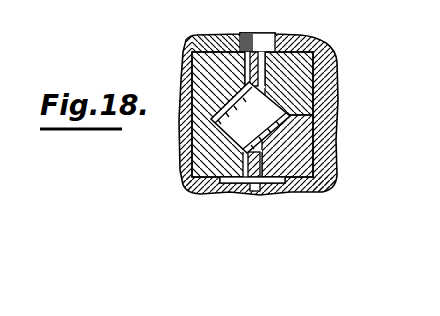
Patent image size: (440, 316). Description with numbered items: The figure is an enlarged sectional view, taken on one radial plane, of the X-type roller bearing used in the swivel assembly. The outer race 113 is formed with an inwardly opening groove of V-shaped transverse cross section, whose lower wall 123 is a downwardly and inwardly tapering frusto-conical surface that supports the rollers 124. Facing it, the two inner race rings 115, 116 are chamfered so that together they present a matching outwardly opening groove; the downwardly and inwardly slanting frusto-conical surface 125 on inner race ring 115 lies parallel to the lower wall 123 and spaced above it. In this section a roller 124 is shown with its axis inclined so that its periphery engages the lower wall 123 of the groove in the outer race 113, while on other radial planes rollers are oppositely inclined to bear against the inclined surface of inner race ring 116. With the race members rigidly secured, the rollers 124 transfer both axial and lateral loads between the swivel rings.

The outer race 113 is at (208, 53).
The inner race ring 115 is at (290, 57).
The inner race ring 116 is at (303, 157).
The lower wall 123 is at (222, 128).
The rollers 124 is at (265, 110).
The frusto-conical surface 125 is at (252, 80).